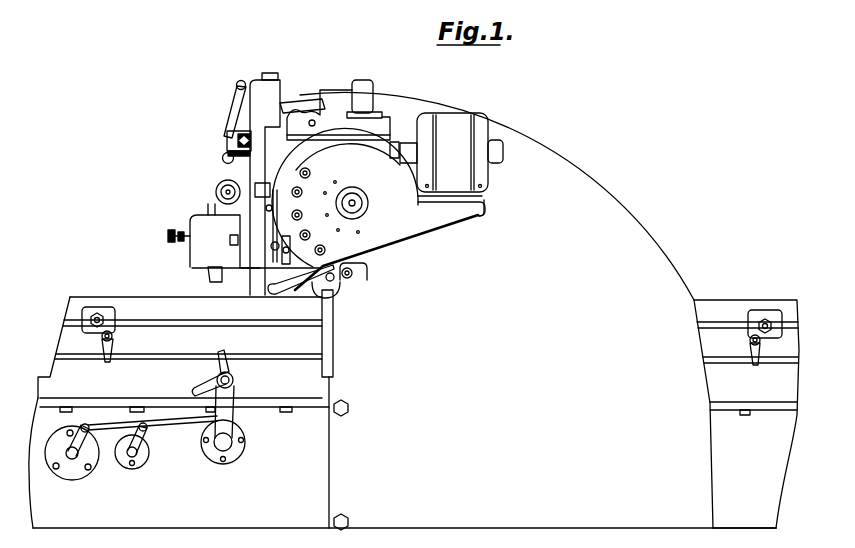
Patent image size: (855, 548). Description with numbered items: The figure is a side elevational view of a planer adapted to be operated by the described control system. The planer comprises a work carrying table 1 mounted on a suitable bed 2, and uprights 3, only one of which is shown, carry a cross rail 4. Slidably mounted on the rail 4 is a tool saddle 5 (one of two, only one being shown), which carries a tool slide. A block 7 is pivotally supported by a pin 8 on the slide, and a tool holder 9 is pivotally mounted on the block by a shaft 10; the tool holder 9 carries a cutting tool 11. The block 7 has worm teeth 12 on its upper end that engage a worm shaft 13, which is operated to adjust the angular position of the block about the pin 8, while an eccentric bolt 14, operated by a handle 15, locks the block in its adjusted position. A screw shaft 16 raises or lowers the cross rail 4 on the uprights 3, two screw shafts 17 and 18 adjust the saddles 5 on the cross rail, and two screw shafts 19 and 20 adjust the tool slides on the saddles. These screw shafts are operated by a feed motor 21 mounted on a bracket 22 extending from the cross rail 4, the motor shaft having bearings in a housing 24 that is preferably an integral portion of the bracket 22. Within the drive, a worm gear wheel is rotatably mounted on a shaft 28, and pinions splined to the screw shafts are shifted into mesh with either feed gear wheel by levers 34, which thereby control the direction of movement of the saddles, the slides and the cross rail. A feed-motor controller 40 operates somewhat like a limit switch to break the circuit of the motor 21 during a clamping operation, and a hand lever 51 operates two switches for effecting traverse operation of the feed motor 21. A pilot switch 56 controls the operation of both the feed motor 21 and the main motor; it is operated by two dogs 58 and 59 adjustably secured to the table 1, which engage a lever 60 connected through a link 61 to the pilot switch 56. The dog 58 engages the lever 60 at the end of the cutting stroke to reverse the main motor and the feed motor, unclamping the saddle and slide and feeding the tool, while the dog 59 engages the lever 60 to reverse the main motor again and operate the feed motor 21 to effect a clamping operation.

The work carrying table 1 is at (723, 310).
The bed 2 is at (739, 520).
The upright 3 is at (578, 180).
The cross rail 4 is at (333, 302).
The tool saddle 5 is at (282, 268).
The block 7 is at (242, 269).
The pin 8 is at (451, 210).
The tool holder 9 is at (194, 253).
The shaft 10 is at (216, 192).
The cutting tool 11 is at (210, 276).
The worm teeth 12 is at (232, 152).
The worm shaft 13 is at (234, 132).
The eccentric bolt 14 is at (222, 160).
The handle 15 is at (236, 89).
The screw shaft 16 is at (325, 250).
The screw shaft 17 is at (310, 235).
The screw shaft 18 is at (310, 173).
The screw shaft 19 is at (305, 216).
The screw shaft 20 is at (302, 192).
The feed motor 21 is at (455, 122).
The bracket 22 is at (477, 218).
The housing 24 is at (394, 140).
The shaft 28 is at (358, 208).
The lever 34 is at (260, 197).
The feed-motor controller 40 is at (362, 82).
The hand lever 51 is at (287, 292).
The pilot switch 56 is at (72, 478).
The dog 58 is at (104, 313).
The dog 59 is at (766, 317).
The lever 60 is at (228, 371).
The link 61 is at (176, 425).